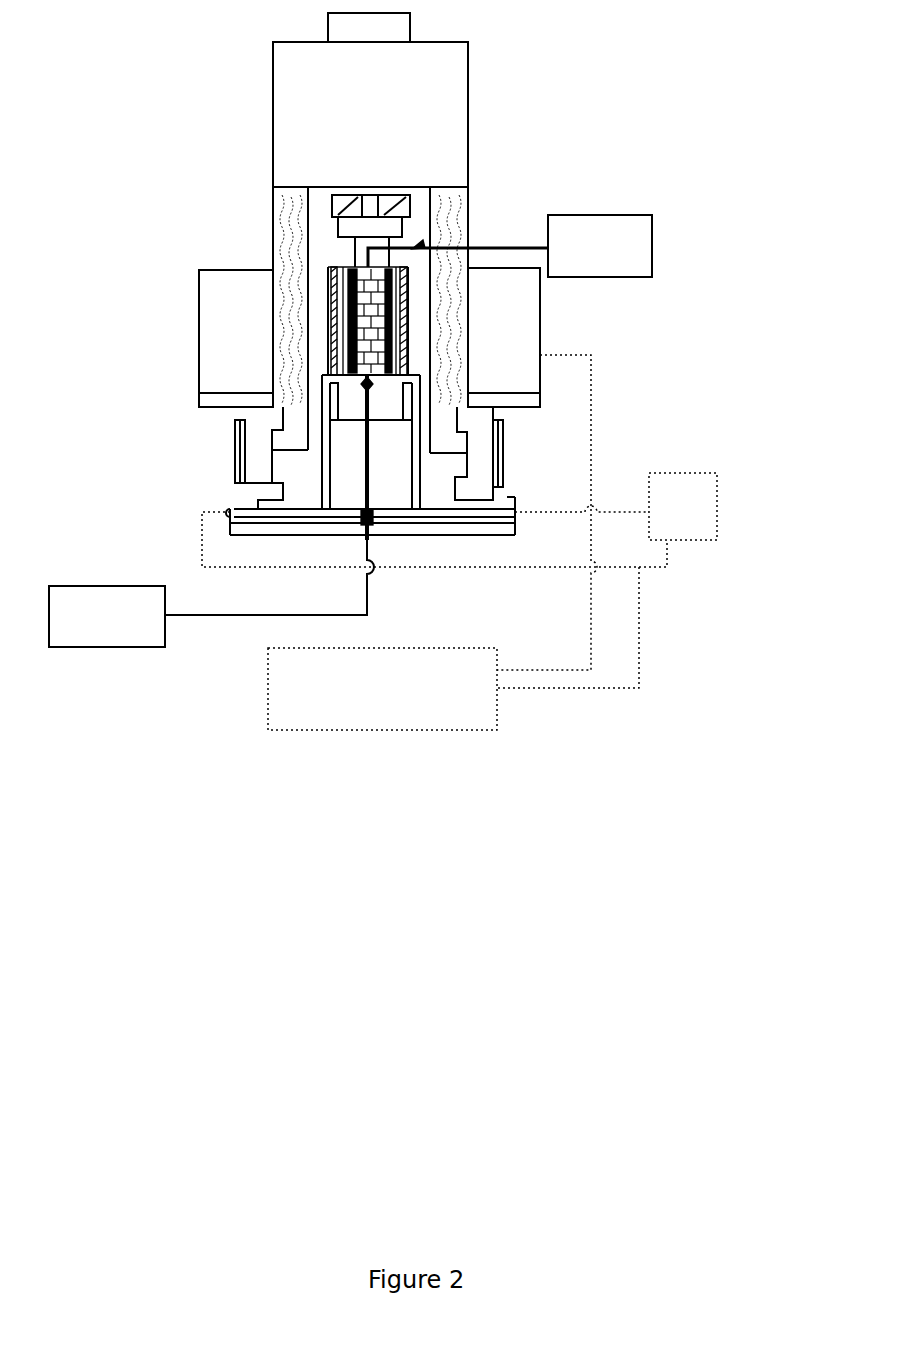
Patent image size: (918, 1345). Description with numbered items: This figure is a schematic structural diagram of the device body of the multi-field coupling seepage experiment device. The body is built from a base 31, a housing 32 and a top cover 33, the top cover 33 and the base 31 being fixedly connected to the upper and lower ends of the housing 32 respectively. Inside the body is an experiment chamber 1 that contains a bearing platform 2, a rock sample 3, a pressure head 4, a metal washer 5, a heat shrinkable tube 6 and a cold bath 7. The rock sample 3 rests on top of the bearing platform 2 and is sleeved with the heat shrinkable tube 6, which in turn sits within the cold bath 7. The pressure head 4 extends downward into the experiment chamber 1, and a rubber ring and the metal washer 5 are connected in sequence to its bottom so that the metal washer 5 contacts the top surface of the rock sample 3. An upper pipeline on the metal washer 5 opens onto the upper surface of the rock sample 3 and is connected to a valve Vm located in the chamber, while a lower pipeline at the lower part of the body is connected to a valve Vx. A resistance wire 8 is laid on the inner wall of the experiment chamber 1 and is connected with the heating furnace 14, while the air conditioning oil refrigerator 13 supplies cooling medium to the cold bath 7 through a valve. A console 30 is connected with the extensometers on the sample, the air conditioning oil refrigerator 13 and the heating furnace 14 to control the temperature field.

The experiment chamber 1 is at (420, 327).
The bearing platform 2 is at (380, 443).
The rock sample 3 is at (397, 288).
The pressure head 4 is at (355, 218).
The metal washer 5 is at (350, 268).
The heat shrinkable tube 6 is at (336, 275).
The cold bath 7 is at (330, 290).
The resistance wire 8 is at (303, 322).
The air conditioning oil refrigerator 13 is at (693, 503).
The heating furnace 14 is at (217, 338).
The console 30 is at (305, 705).
The base 31 is at (300, 468).
The housing 32 is at (468, 288).
The top cover 33 is at (425, 160).
The valve Vm is at (421, 244).
The valve Vx is at (367, 392).